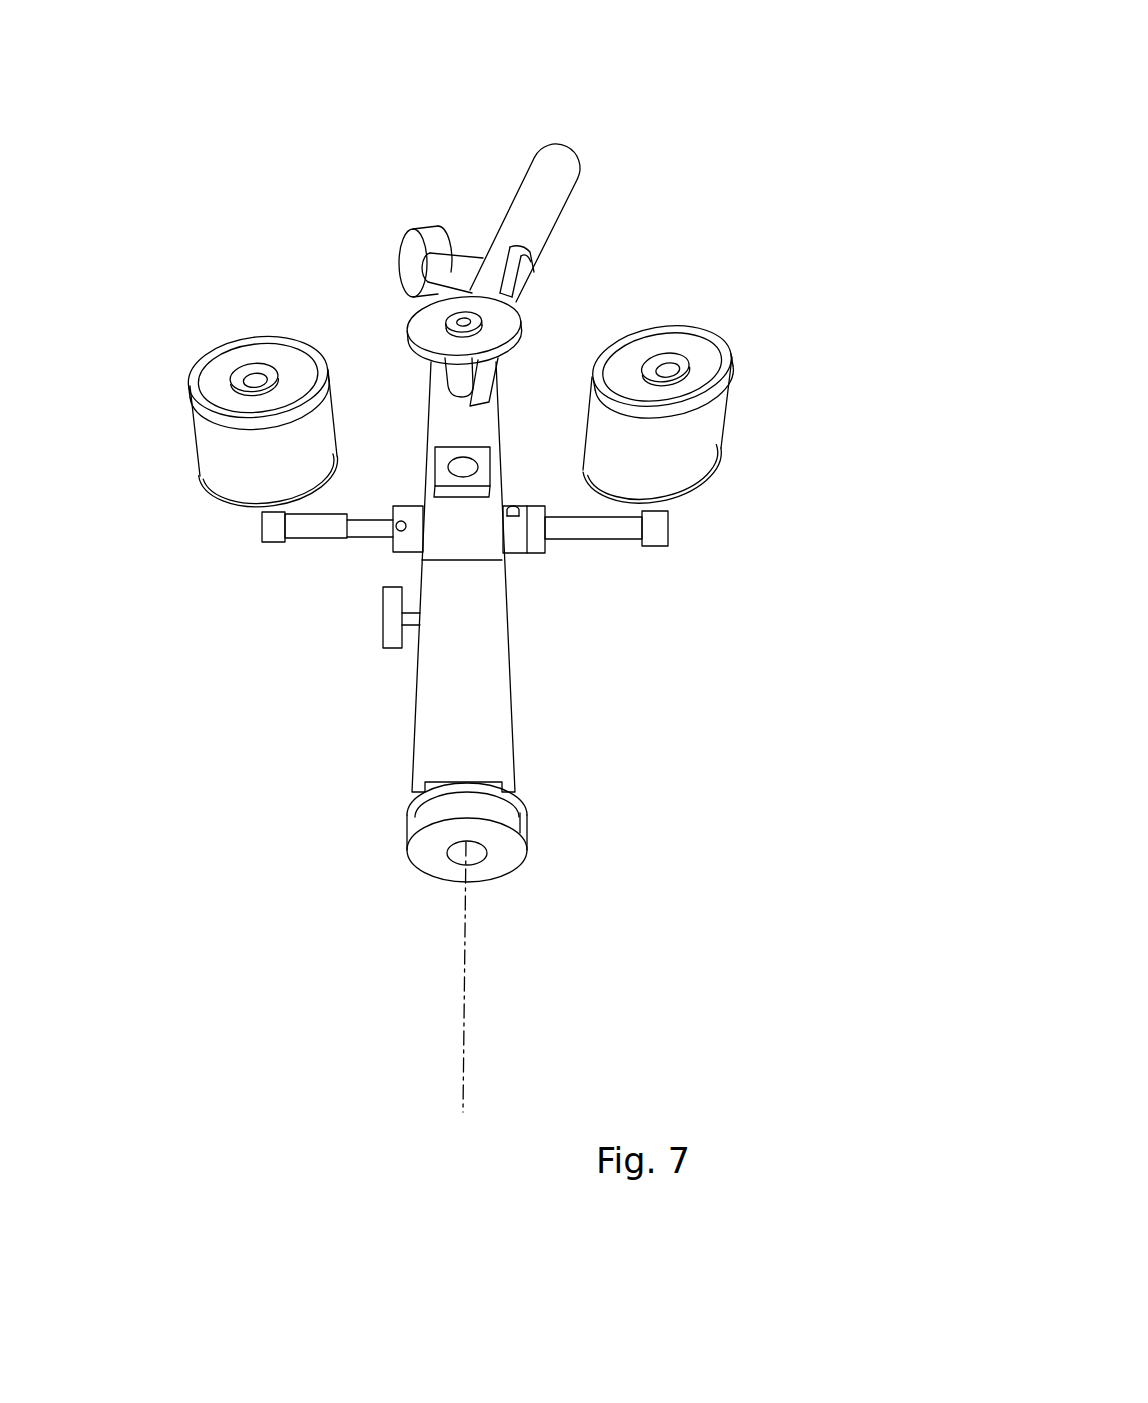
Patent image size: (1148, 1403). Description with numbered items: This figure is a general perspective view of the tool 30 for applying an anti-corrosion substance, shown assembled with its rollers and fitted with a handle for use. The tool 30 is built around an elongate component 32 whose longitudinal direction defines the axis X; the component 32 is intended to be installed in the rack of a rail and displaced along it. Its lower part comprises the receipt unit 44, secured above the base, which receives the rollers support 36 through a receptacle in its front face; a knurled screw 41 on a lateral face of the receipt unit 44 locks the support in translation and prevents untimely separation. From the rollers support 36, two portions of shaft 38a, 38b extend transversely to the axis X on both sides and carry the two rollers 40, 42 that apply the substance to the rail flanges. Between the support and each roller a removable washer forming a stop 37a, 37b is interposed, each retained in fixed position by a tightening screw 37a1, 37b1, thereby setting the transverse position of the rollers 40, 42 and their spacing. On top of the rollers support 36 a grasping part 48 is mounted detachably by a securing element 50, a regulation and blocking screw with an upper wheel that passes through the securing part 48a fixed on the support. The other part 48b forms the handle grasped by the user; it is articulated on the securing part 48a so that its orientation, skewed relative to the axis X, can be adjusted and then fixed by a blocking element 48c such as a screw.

The tool 30 is at (712, 556).
The component 32 is at (528, 803).
The rollers support 36 is at (440, 434).
The stop 37a is at (525, 562).
The tightening screw 37a1 is at (540, 500).
The stop 37b is at (393, 545).
The tightening screw 37b1 is at (403, 522).
The portion of shaft 38a is at (633, 527).
The portion of shaft 38b is at (333, 522).
The roller 40 is at (710, 327).
The knurled screw 41 is at (382, 623).
The roller 42 is at (190, 385).
The receipt unit 44 is at (478, 730).
The grasping part 48 is at (567, 235).
The securing part 48a is at (497, 365).
The handle 48b is at (552, 162).
The blocking element 48c is at (420, 250).
The securing element 50 is at (410, 320).
The longitudinal axis X is at (466, 978).